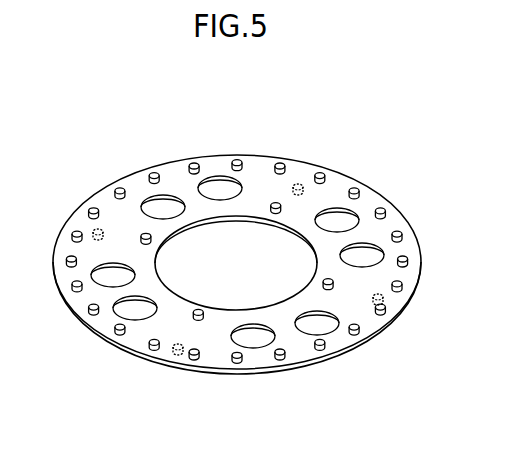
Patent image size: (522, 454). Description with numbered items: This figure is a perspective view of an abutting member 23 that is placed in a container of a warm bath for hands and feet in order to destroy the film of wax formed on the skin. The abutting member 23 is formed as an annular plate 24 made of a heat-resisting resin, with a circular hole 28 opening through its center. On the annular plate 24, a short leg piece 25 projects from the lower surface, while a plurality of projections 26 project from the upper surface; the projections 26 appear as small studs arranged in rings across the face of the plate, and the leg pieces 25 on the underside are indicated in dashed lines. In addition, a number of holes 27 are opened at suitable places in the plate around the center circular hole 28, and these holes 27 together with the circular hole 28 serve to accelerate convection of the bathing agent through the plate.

The abutting member 23 is at (237, 258).
The annular plate 24 is at (117, 205).
The short leg piece 25 is at (301, 185).
The projections 26 is at (276, 202).
The holes 27 is at (147, 195).
The circular hole 28 is at (203, 219).